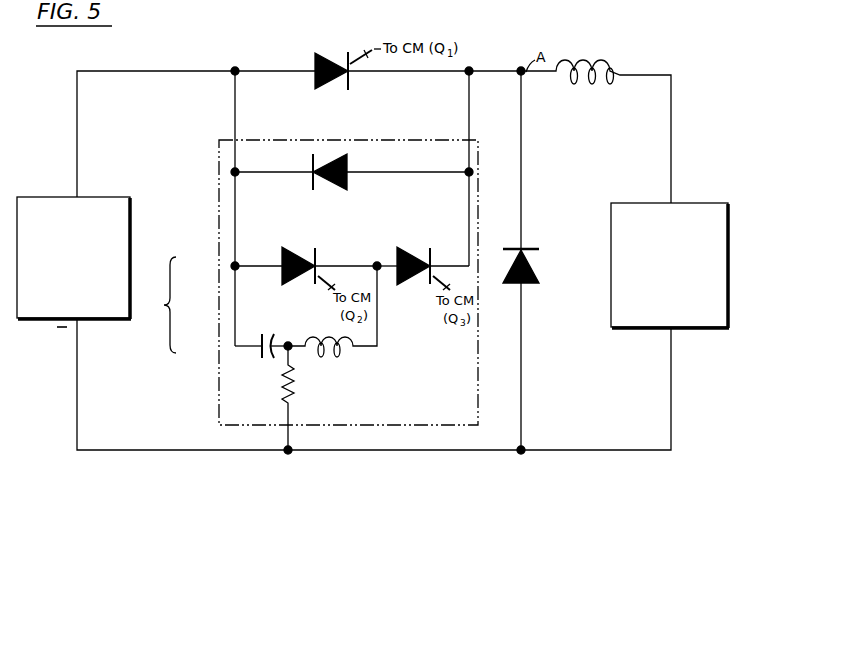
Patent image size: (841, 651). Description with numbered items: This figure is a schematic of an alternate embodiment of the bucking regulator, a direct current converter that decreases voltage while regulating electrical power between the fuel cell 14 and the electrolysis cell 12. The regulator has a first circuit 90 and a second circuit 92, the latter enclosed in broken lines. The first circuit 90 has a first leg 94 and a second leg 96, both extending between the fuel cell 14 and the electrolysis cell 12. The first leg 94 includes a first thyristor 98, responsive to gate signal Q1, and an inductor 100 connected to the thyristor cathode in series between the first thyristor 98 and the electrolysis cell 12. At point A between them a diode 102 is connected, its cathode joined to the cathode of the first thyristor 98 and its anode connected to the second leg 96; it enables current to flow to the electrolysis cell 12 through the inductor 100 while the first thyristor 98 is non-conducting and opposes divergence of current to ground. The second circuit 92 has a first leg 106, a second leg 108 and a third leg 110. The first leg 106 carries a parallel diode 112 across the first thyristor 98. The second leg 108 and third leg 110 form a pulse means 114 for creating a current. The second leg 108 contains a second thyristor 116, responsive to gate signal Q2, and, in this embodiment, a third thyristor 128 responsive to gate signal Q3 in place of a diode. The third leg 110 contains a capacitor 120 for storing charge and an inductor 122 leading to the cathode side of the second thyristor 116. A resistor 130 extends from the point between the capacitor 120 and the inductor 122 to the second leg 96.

The electrolysis cell 12 is at (693, 204).
The fuel cell 14 is at (98, 197).
The first circuit 90 is at (455, 71).
The second circuit 92 is at (217, 403).
The first leg 94 is at (100, 71).
The second leg 96 is at (371, 452).
The first thyristor 98 is at (337, 56).
The inductor 100 is at (603, 60).
The diode 102 is at (533, 258).
The first leg 106 is at (398, 176).
The second leg 108 is at (246, 263).
The third leg 110 is at (244, 348).
The parallel diode 112 is at (349, 170).
The pulse means 114 is at (158, 305).
The second thyristor 116 is at (314, 252).
The capacitor 120 is at (271, 364).
The inductor 122 is at (345, 352).
The third thyristor 128 is at (426, 252).
The resistor 130 is at (295, 388).